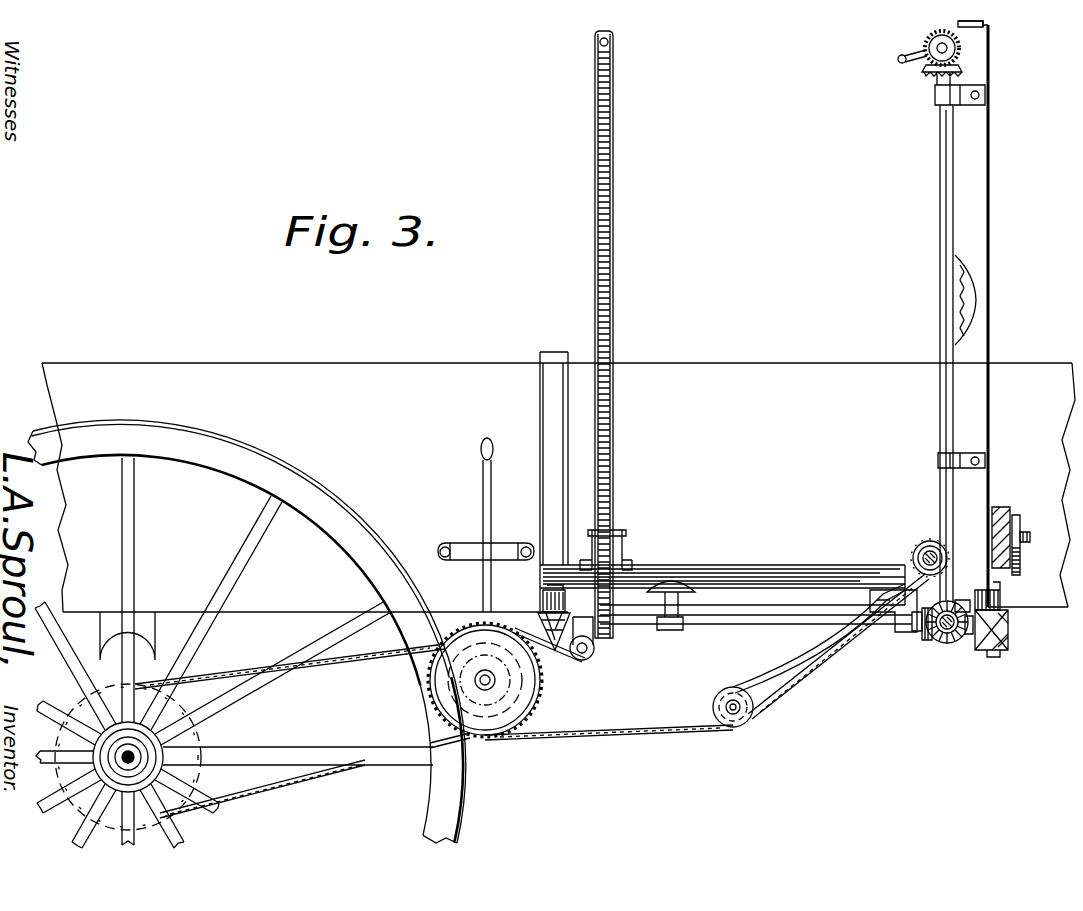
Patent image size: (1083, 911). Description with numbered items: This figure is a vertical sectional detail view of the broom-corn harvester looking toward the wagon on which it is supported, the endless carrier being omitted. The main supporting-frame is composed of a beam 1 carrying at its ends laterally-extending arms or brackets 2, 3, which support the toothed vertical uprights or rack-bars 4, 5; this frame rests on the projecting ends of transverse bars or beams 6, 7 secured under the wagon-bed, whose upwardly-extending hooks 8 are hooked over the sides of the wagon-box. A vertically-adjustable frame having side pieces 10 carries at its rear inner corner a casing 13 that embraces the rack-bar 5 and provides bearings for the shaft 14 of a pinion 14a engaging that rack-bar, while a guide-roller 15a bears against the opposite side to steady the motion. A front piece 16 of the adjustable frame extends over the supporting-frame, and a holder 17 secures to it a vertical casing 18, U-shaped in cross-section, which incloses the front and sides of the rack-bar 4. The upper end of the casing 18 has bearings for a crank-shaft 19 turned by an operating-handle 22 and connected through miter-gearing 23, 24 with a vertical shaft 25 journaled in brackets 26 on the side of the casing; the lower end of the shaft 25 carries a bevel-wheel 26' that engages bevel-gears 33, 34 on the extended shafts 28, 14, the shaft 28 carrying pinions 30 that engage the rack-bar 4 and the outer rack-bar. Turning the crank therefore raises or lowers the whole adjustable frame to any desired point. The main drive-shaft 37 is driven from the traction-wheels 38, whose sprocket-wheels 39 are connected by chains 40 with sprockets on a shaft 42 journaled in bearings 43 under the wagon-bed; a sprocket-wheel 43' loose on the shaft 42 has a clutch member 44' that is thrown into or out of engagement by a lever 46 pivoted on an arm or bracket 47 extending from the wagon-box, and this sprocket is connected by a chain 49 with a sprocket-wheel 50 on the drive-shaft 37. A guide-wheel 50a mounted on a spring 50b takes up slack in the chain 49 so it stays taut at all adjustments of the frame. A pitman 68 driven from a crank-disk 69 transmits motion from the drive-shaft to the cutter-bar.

The beam 1 is at (726, 565).
The arm or bracket 2 is at (1000, 598).
The arm or bracket 3 is at (542, 595).
The upright or post (rack-bar) 4 is at (983, 25).
The upright or post (rack-bar) 5 is at (613, 62).
The bar or beam 6 is at (1008, 633).
The bar or beam 7 is at (570, 655).
The hook 8 is at (558, 352).
The side piece 10 is at (670, 578).
The casing 13 is at (622, 546).
The shaft 14 is at (714, 626).
The pinion 14a is at (595, 660).
The guide-roller 15a is at (620, 530).
The front piece 16 is at (1017, 532).
The holder 17 is at (1000, 507).
The casing 18 is at (992, 313).
The crank-shaft 19 is at (930, 47).
The operating-handle 22 is at (901, 66).
The miter-gear 23 is at (955, 50).
The miter-gear 24 is at (962, 70).
The vertical shaft 25 is at (940, 186).
The bracket 26 is at (941, 276).
The bevel-wheel 26' is at (969, 589).
The shaft 28 is at (942, 644).
The pinion 30 is at (968, 636).
The bevel-gear 33 is at (950, 645).
The bevel-gear 34 is at (926, 640).
The main drive-shaft 37 is at (922, 548).
The traction-wheel 38 is at (243, 440).
The sprocket-wheel 39 is at (196, 741).
The chain 40 is at (238, 668).
The shaft 42 is at (492, 690).
The bearing 43 is at (372, 700).
The sprocket-wheel 43' is at (298, 722).
The clutch member 44' is at (489, 665).
The lever 46 is at (490, 522).
The arm or bracket 47 is at (506, 547).
The chain 49 is at (660, 749).
The sprocket-wheel 50 is at (932, 541).
The guide-wheel 50a is at (738, 728).
The spring 50b is at (804, 672).
The pitman 68 is at (1030, 537).
The crank-disk 69 is at (1020, 565).